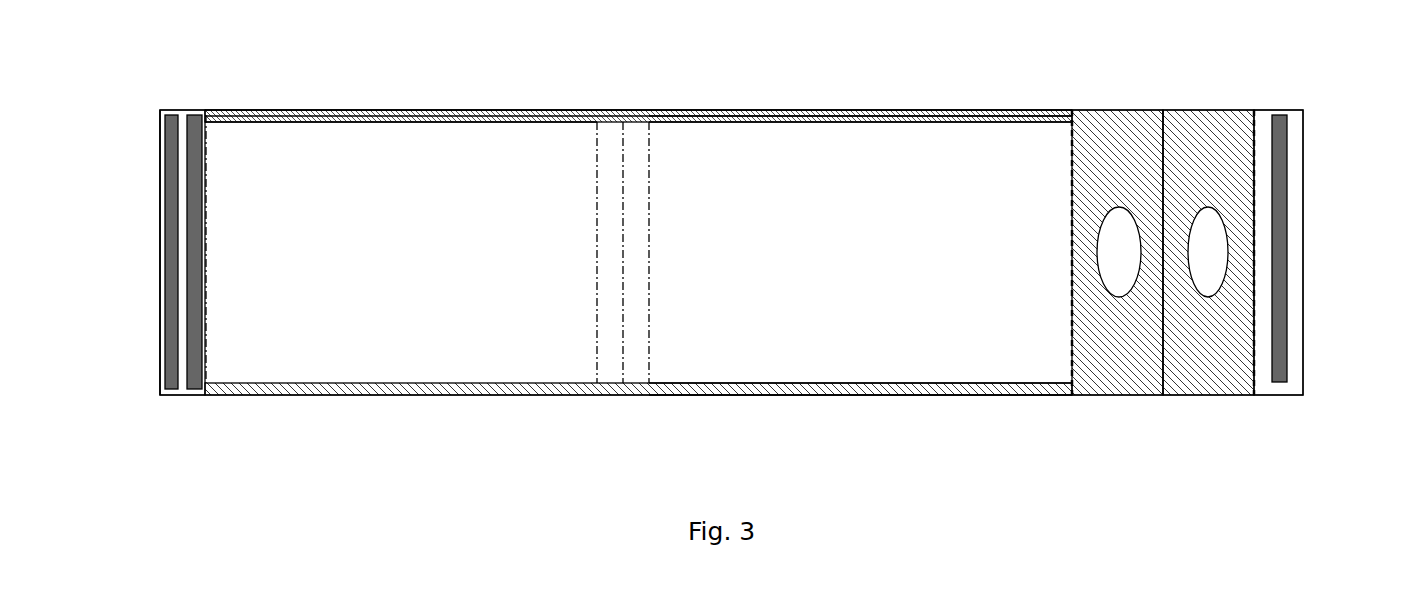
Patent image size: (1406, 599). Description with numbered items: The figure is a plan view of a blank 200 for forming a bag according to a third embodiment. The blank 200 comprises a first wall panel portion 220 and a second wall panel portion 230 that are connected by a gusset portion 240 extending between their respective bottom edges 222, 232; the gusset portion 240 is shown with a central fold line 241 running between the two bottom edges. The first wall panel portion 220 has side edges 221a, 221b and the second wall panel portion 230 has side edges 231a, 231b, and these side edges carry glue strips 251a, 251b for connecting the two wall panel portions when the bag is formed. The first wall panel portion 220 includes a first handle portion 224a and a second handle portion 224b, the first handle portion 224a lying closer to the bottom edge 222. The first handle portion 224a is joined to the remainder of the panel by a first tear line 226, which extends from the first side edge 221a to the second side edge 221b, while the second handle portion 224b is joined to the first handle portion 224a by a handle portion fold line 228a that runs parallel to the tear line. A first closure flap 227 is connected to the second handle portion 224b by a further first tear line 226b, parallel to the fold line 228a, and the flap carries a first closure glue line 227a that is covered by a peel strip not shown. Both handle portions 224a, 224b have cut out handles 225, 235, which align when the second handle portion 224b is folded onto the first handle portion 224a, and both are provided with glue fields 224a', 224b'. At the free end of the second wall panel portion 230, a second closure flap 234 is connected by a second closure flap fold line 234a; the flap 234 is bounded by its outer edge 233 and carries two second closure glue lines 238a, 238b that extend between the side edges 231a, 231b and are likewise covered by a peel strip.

The blank 200 is at (606, 76).
The first wall panel portion 220 is at (948, 108).
The first side edge of first wall panel portion 221a is at (827, 110).
The second side edge of first wall panel portion 221b is at (833, 395).
The bottom edge of first wall panel portion 222 is at (652, 362).
The first handle portion 224a is at (1117, 221).
The second handle portion 224b is at (1208, 221).
The glue field of first handle portion 224a' is at (1128, 169).
The glue field of second handle portion 224b' is at (1213, 169).
The cut out handle 225 is at (1100, 266).
The first fold line 226 is at (1070, 148).
The further first tear line 226b is at (1257, 140).
The first closure flap 227 is at (1268, 395).
The first closure glue line 227a is at (1285, 298).
The handle portion fold line 228a is at (1165, 372).
The second wall panel portion 230 is at (440, 108).
The first side edge of second wall panel portion 231a is at (536, 110).
The second side edge of second wall panel portion 231b is at (403, 395).
The bottom edge of second wall panel portion 232 is at (592, 362).
The side wall 233 is at (160, 243).
The second closure flap 234 is at (165, 395).
The second closure flap fold line 234a is at (207, 185).
The cut out handle 235 is at (1200, 294).
The second closure glue line 238a is at (172, 328).
The second closure glue line 238b is at (196, 292).
The gusset portion 240 is at (624, 397).
The separator centerline 241 is at (627, 170).
The glue strip 251a is at (338, 110).
The glue strip 251b is at (965, 395).